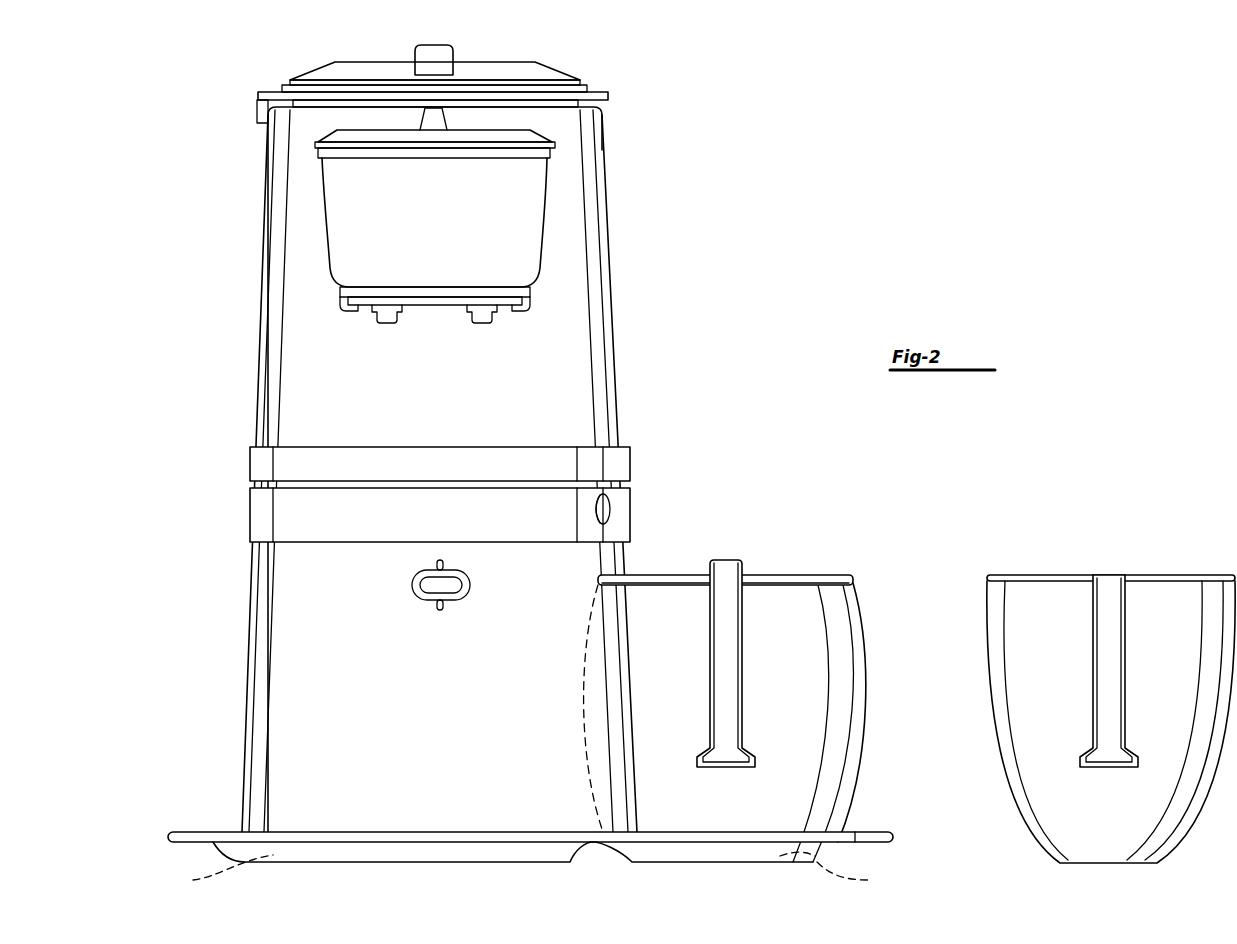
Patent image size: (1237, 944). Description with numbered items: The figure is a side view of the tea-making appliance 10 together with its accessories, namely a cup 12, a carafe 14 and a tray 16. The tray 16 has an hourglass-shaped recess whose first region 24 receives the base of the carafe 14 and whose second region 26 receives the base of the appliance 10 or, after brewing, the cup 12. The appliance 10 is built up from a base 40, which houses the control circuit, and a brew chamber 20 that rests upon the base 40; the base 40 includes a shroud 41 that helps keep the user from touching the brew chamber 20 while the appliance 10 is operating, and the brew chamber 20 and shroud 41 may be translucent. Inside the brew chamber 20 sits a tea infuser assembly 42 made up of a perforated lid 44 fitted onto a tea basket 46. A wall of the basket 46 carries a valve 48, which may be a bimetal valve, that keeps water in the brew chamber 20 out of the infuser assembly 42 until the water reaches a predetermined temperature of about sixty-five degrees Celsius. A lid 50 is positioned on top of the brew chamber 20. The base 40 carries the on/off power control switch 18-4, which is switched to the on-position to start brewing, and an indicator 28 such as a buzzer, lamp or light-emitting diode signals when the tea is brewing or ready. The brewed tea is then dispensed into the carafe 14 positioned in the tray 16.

The tea-making appliance 10 is at (445, 469).
The cup 12 is at (1148, 575).
The carafe 14 is at (790, 575).
The tray 16 is at (893, 837).
The power control switch 18-4 is at (422, 583).
The brew chamber 20 is at (444, 383).
The first region 24 is at (841, 872).
The second region 26 is at (219, 872).
The indicator 28 is at (608, 510).
The base 40 is at (248, 660).
The shroud 41 is at (262, 300).
The tea infuser assembly 42 is at (442, 242).
The perforated lid 44 is at (356, 134).
The tea basket 46 is at (540, 275).
The valve 48 is at (481, 323).
The lid 50 is at (555, 72).